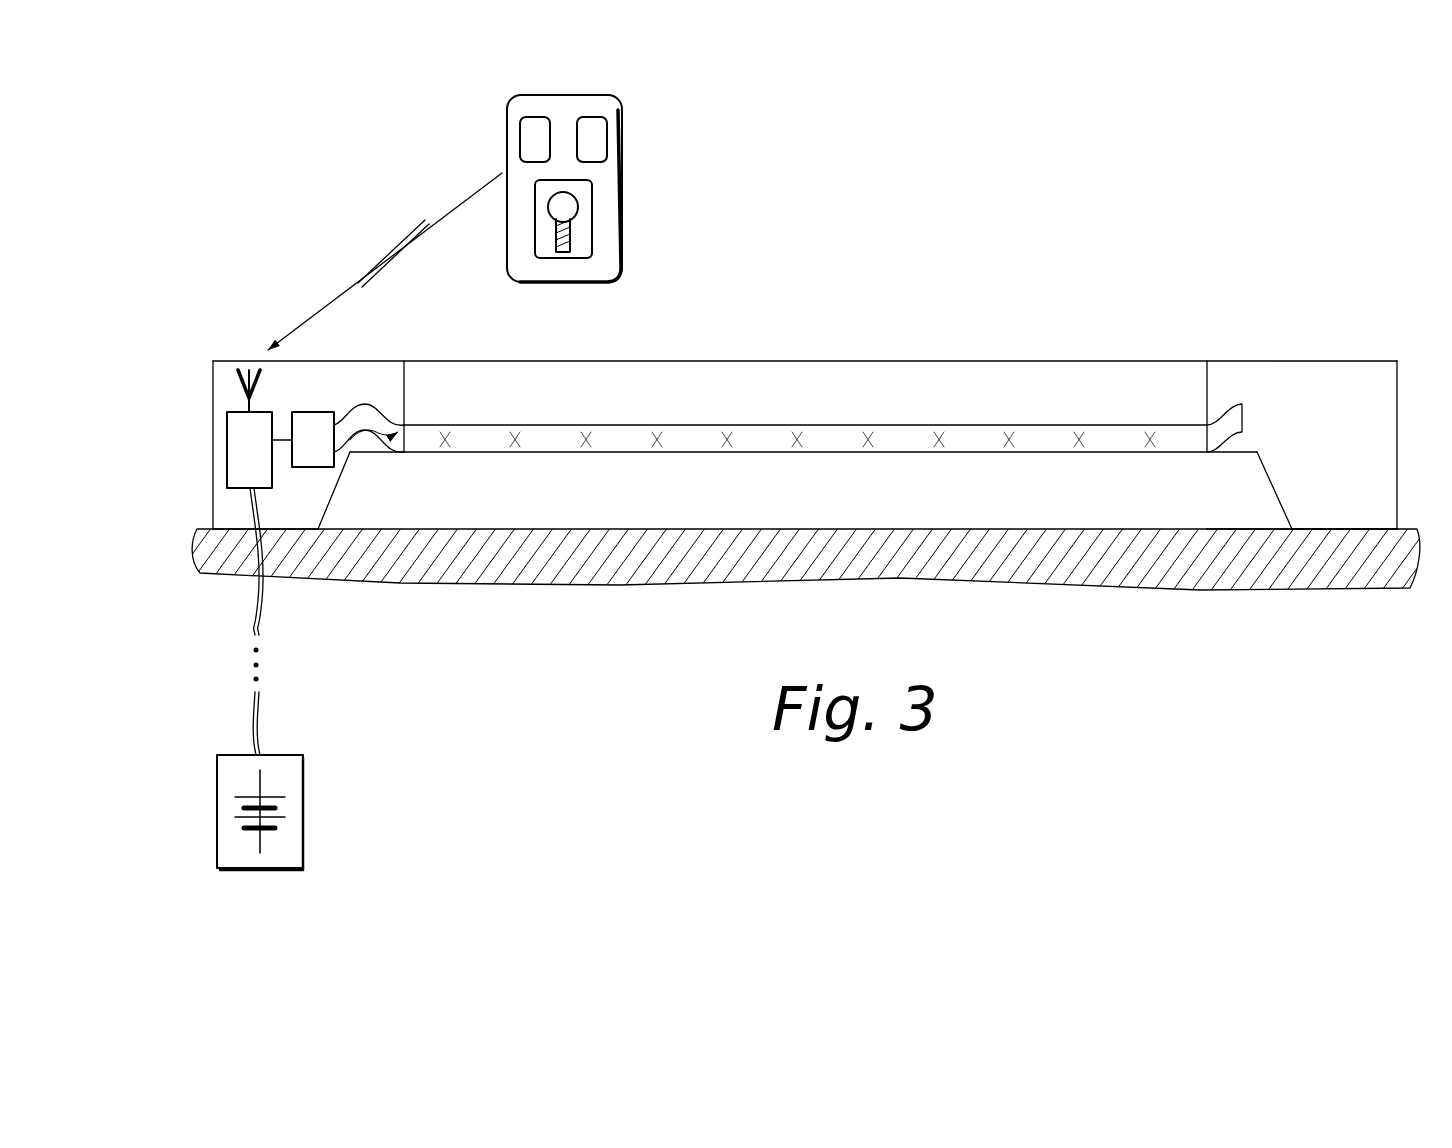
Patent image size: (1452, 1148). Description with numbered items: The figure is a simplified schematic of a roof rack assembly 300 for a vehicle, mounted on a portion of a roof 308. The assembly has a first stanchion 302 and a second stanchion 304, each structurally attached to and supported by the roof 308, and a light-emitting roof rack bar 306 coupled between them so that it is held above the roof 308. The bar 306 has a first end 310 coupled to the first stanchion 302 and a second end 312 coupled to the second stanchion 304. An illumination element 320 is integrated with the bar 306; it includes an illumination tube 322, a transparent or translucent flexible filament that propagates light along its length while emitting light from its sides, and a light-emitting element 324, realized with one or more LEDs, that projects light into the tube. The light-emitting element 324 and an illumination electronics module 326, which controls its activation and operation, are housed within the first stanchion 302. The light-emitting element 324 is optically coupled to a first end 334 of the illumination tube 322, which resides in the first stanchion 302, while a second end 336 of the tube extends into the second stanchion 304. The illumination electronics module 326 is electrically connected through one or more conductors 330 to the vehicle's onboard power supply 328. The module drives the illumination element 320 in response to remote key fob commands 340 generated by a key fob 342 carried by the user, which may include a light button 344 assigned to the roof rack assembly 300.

The roof rack assembly 300 is at (1238, 350).
The first stanchion 302 is at (370, 361).
The second stanchion 304 is at (1352, 361).
The light-emitting roof rack bar 306 is at (742, 361).
The roof 308 is at (623, 572).
The first end 310 is at (458, 345).
The second end 312 is at (1192, 356).
The illumination element 320 is at (540, 460).
The illumination tube 322 is at (688, 435).
The light-emitting element 324 is at (313, 411).
The illumination electronics module 326 is at (227, 438).
The power supply 328 is at (303, 785).
The conductors 330 is at (262, 598).
The first end of the illumination tube 334 is at (380, 408).
The second end of the illumination tube 336 is at (1242, 405).
The remote key fob commands 340 is at (378, 258).
The key fob 342 is at (622, 133).
The light button 344 is at (590, 221).